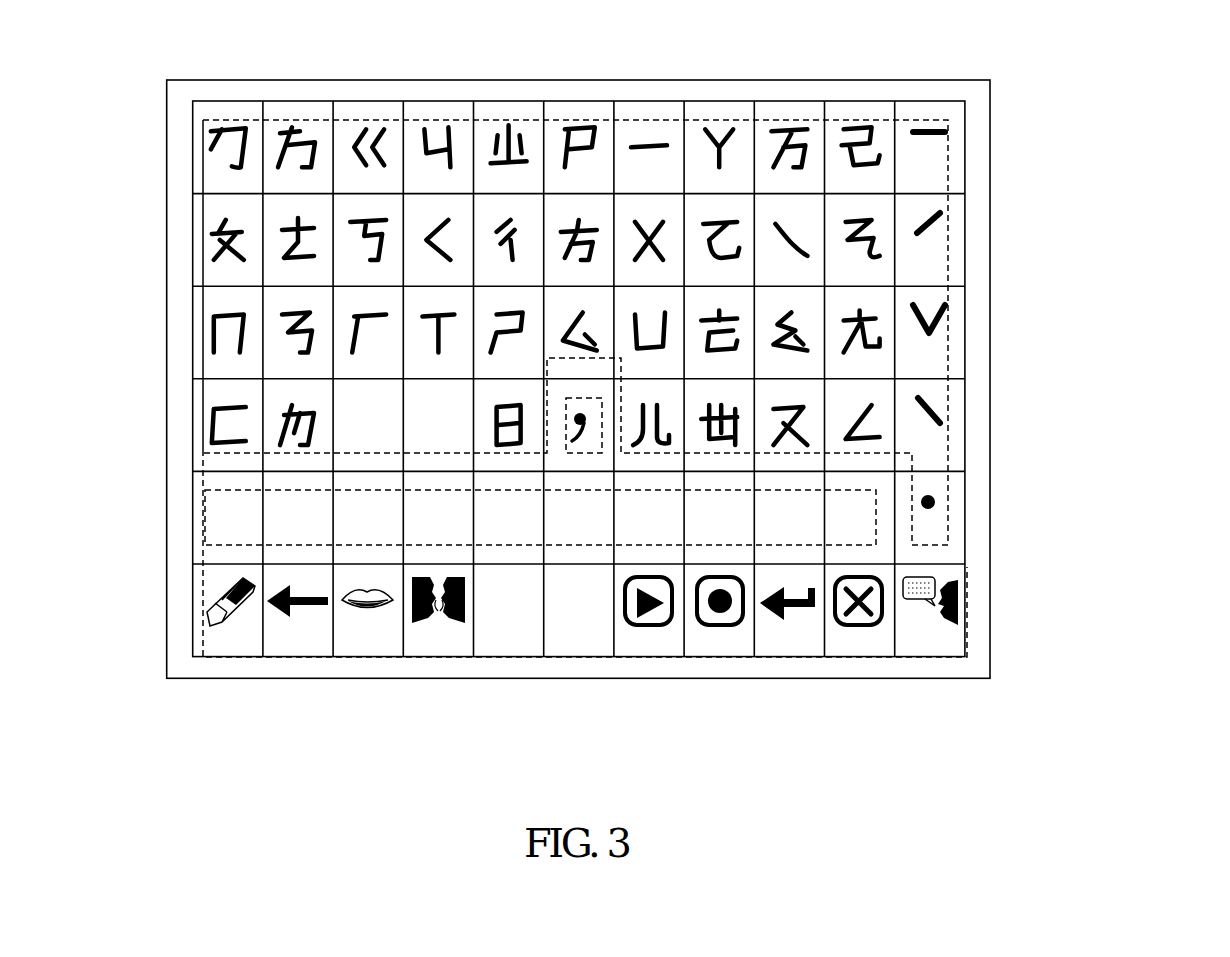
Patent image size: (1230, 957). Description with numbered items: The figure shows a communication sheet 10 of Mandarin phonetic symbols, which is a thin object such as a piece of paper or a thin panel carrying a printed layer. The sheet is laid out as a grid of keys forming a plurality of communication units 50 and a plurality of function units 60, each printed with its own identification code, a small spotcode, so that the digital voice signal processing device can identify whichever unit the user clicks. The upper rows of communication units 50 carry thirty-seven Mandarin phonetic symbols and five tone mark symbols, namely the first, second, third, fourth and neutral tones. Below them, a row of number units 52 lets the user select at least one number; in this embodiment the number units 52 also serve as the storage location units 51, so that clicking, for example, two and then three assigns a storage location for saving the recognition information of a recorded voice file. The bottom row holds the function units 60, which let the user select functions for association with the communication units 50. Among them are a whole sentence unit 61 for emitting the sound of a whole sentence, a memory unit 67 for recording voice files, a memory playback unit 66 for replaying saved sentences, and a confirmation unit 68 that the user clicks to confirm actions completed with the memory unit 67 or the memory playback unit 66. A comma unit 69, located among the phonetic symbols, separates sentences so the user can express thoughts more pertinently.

The communication sheet 10 is at (1126, 134).
The communication units 50 is at (203, 230).
The storage location units 51 is at (447, 520).
The number units 52 is at (203, 507).
The function units 60 is at (572, 397).
The whole sentence unit 61 is at (947, 628).
The memory playback unit 66 is at (678, 638).
The memory unit 67 is at (748, 638).
The confirmation unit 68 is at (807, 650).
The comma unit 69 is at (587, 436).